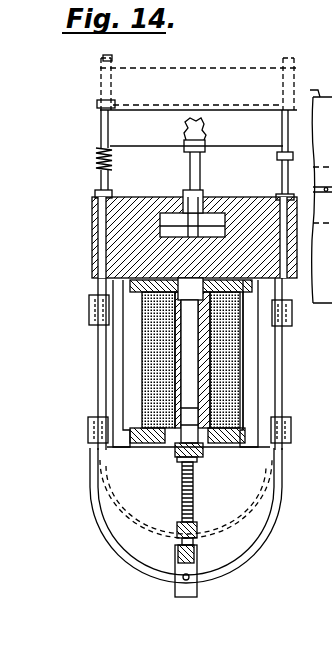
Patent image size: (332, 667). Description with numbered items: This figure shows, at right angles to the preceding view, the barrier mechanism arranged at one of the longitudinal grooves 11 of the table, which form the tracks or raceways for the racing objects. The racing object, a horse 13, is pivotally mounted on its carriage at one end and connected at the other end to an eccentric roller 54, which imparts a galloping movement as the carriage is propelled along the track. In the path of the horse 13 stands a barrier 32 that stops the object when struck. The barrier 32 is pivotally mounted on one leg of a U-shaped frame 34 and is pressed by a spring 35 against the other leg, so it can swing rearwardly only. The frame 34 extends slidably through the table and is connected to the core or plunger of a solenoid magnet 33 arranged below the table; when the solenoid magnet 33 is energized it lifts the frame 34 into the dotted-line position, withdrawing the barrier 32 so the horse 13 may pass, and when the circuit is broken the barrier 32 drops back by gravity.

The longitudinal groove 11 is at (165, 224).
The horse 13 is at (188, 158).
The barrier 32 is at (147, 118).
The solenoid magnet 33 is at (240, 385).
The U-shaped frame 34 is at (282, 493).
The spring 35 is at (96, 162).
The roller 54 is at (205, 206).